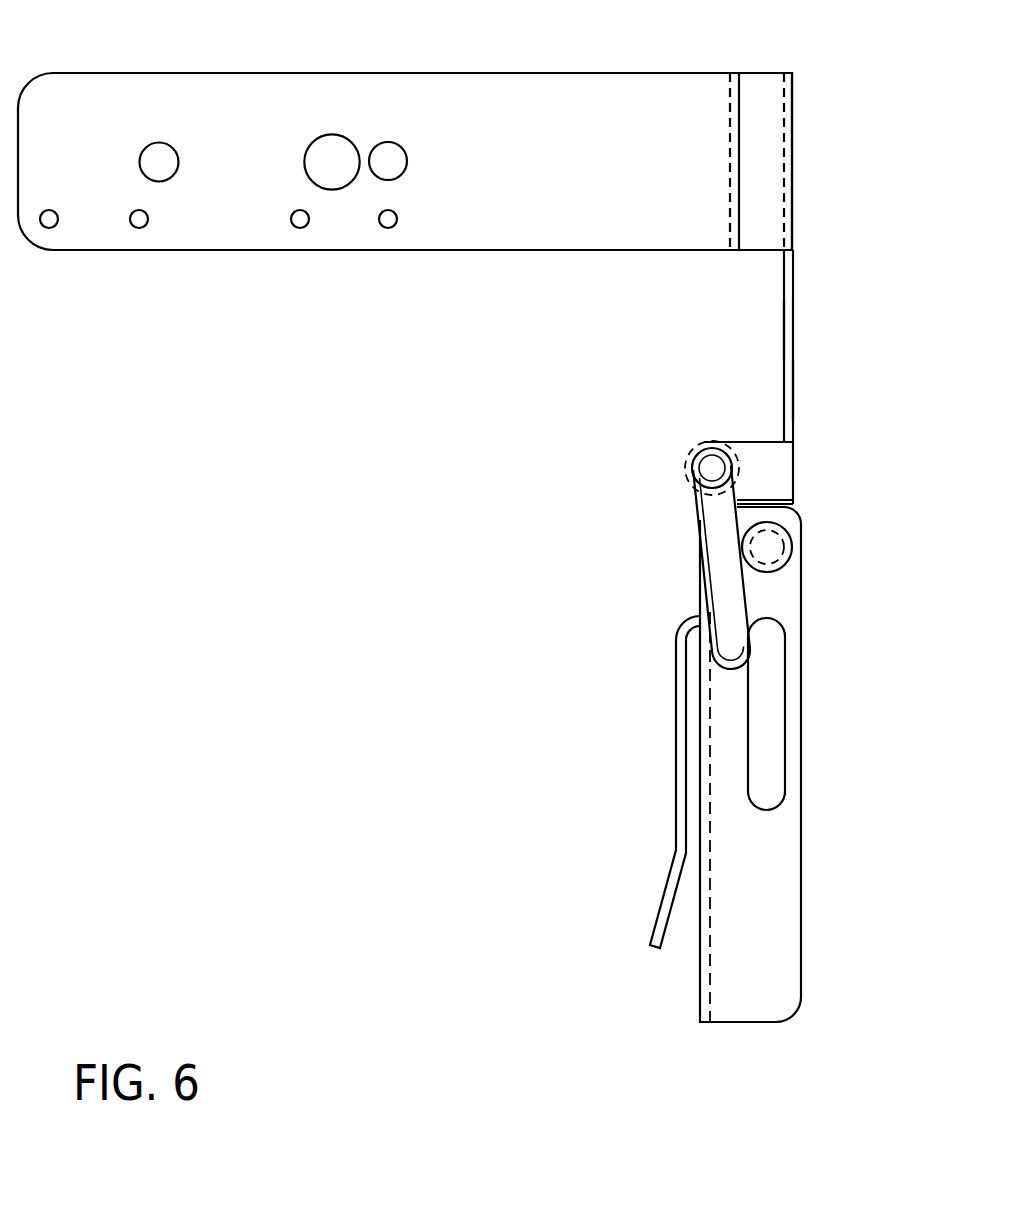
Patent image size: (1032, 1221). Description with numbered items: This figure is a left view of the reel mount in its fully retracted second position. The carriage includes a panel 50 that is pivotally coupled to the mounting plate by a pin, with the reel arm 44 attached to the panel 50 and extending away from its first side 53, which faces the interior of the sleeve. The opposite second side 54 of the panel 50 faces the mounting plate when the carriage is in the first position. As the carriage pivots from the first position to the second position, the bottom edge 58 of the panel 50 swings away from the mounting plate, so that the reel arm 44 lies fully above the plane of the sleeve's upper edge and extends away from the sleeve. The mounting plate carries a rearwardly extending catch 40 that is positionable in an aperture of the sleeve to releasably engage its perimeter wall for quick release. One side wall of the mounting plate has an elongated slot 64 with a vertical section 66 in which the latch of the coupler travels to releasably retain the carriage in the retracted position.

The reel arm 44 is at (540, 104).
The bottom edge 58 is at (792, 72).
The panel 50 is at (787, 278).
The first side 53 is at (783, 330).
The second side 54 is at (795, 387).
The elongated slot 64 is at (780, 625).
The vertical section 66 is at (790, 748).
The catch 40 is at (667, 907).